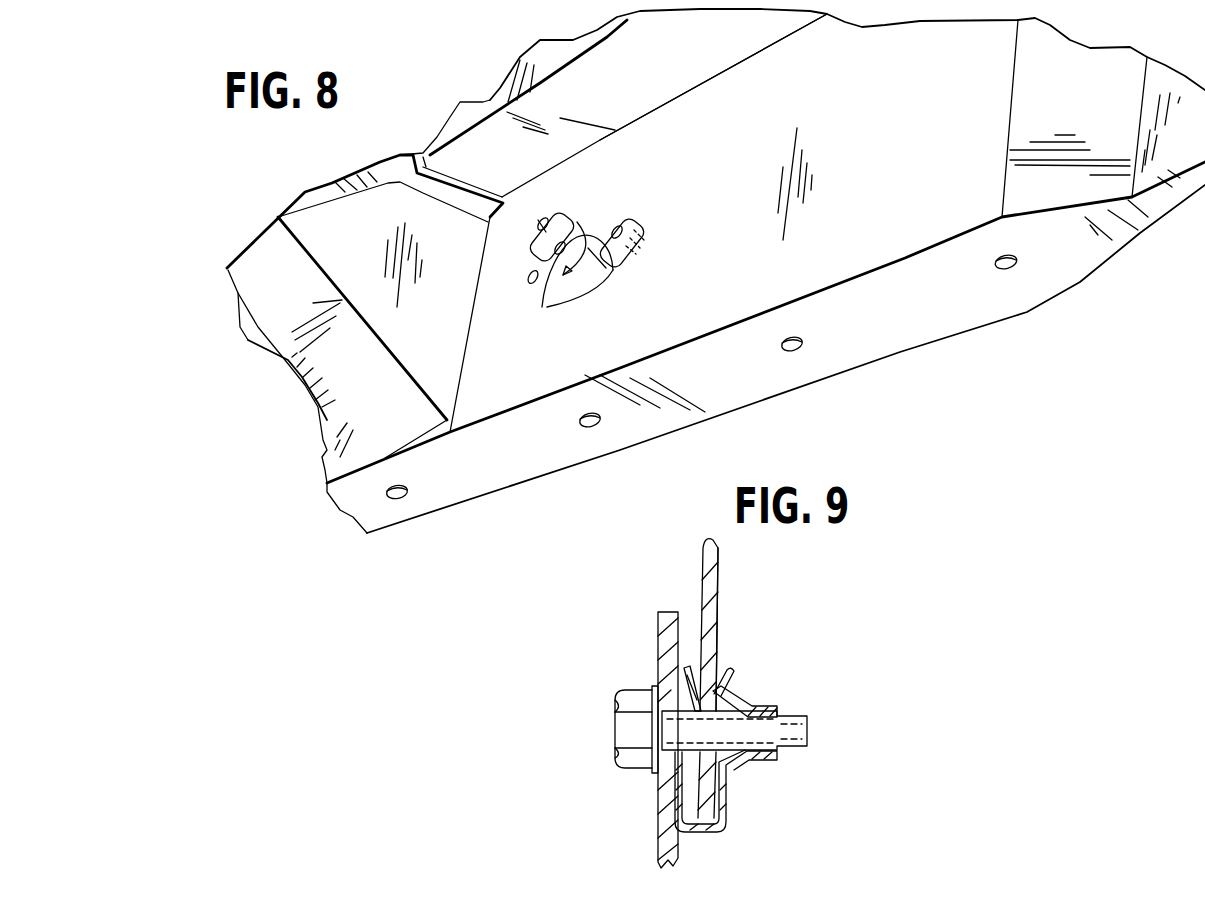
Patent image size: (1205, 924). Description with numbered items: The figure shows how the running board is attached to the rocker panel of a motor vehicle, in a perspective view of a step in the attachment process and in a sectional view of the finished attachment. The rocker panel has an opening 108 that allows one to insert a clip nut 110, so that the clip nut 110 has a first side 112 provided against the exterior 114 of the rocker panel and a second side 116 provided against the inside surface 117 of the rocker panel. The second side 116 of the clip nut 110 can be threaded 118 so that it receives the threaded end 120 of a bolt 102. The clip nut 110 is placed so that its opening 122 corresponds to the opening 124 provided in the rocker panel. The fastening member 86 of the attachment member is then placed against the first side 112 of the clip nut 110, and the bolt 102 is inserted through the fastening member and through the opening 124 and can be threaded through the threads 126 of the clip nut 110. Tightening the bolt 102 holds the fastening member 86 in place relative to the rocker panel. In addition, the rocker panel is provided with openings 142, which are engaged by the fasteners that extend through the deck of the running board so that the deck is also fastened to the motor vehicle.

In FIG. 9, the fastening member 86 is at (664, 614).
In FIG. 9, the bolt 102 is at (627, 733).
In FIG. 8, the opening 108 is at (577, 293).
In FIG. 8, the clip nut 110 is at (622, 230).
In FIG. 8, the first side 112 is at (536, 240).
In FIG. 9, the first side 112 is at (688, 677).
In FIG. 8, the exterior 114 is at (522, 390).
In FIG. 9, the exterior 114 is at (703, 558).
In FIG. 8, the second side 116 is at (566, 216).
In FIG. 9, the inside surface 117 is at (719, 574).
In FIG. 8, the threaded 118 is at (604, 268).
In FIG. 9, the threaded end 120 is at (808, 748).
In FIG. 8, the opening 122 is at (548, 215).
In FIG. 8, the opening 124 is at (529, 283).
In FIG. 9, the threads 126 is at (757, 706).
In FIG. 8, the openings 142 is at (586, 424).